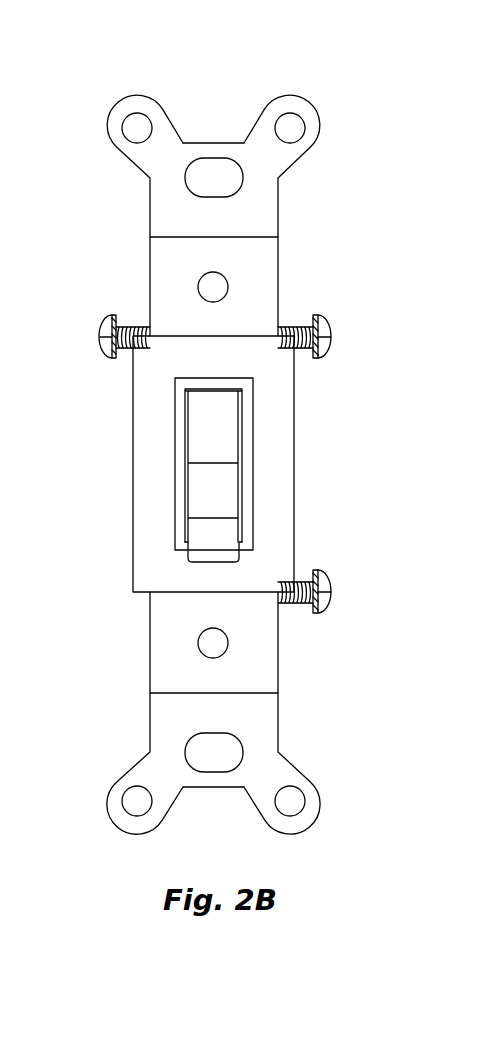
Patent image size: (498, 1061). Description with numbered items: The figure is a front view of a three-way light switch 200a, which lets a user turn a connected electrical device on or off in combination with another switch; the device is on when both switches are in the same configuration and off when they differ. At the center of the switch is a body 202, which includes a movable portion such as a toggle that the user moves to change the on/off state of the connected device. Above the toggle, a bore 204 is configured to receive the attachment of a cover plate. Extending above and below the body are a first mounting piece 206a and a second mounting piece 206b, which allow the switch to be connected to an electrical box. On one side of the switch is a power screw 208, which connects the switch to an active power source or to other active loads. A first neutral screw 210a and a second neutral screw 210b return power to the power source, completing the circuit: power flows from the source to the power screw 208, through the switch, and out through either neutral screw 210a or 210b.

The 3-way switch 200a is at (108, 60).
The body 202 is at (280, 478).
The bore 204 is at (218, 287).
The first mounting piece 206a is at (251, 215).
The second mounting piece 206b is at (253, 750).
The power screw 208 is at (327, 610).
The first neutral screw 210a is at (102, 335).
The second neutral screw 210b is at (328, 347).